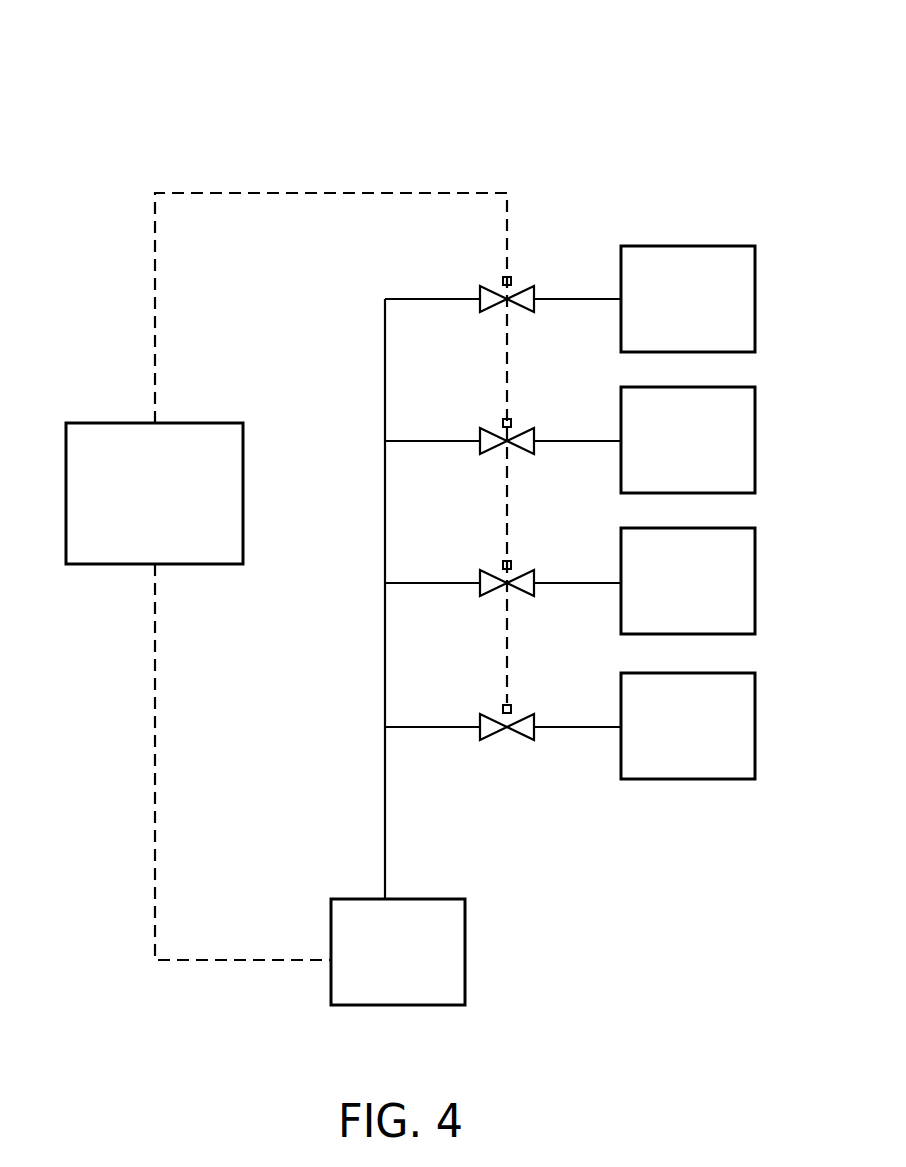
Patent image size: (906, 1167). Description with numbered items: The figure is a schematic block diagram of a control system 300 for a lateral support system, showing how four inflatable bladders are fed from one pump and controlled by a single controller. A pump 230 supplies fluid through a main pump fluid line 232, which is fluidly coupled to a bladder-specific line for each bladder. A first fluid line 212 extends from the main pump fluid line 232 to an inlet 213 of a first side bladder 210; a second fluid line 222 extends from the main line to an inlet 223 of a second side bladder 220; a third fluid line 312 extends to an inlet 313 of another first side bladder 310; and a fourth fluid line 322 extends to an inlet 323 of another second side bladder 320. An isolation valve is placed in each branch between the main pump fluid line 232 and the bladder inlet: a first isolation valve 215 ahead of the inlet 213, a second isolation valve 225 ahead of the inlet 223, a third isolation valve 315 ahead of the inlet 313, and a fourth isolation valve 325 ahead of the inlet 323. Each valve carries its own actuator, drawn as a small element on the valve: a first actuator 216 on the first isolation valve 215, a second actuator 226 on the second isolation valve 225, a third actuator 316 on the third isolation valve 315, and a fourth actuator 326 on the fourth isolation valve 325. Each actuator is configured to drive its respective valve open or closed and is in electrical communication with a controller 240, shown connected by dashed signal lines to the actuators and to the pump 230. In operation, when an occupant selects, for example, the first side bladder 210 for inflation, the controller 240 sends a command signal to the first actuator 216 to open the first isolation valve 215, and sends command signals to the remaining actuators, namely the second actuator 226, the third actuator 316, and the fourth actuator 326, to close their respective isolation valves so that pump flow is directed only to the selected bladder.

The bladder system 300 is at (549, 124).
The controller 240 is at (154, 493).
The pump 230 is at (398, 952).
The main pump fluid line 232 is at (384, 793).
The first side bladder 210 is at (688, 299).
The first fluid line 212 is at (421, 302).
The inlet of first side bladder 213 is at (619, 301).
The first isolation valve 215 is at (528, 298).
The first actuator 216 is at (503, 280).
The second side bladder 220 is at (688, 440).
The second fluid line 222 is at (414, 444).
The inlet of second side bladder 223 is at (619, 442).
The second isolation valve 225 is at (530, 440).
The second actuator 226 is at (503, 422).
The first side bladder 310 is at (688, 581).
The third fluid line 312 is at (418, 586).
The inlet of first side bladder 313 is at (620, 584).
The third isolation valve 315 is at (530, 580).
The third actuator 316 is at (503, 564).
The second side bladder 320 is at (688, 726).
The fourth fluid line 322 is at (418, 730).
The inlet of second side bladder 323 is at (620, 729).
The fourth isolation valve 325 is at (530, 726).
The fourth actuator 326 is at (503, 708).